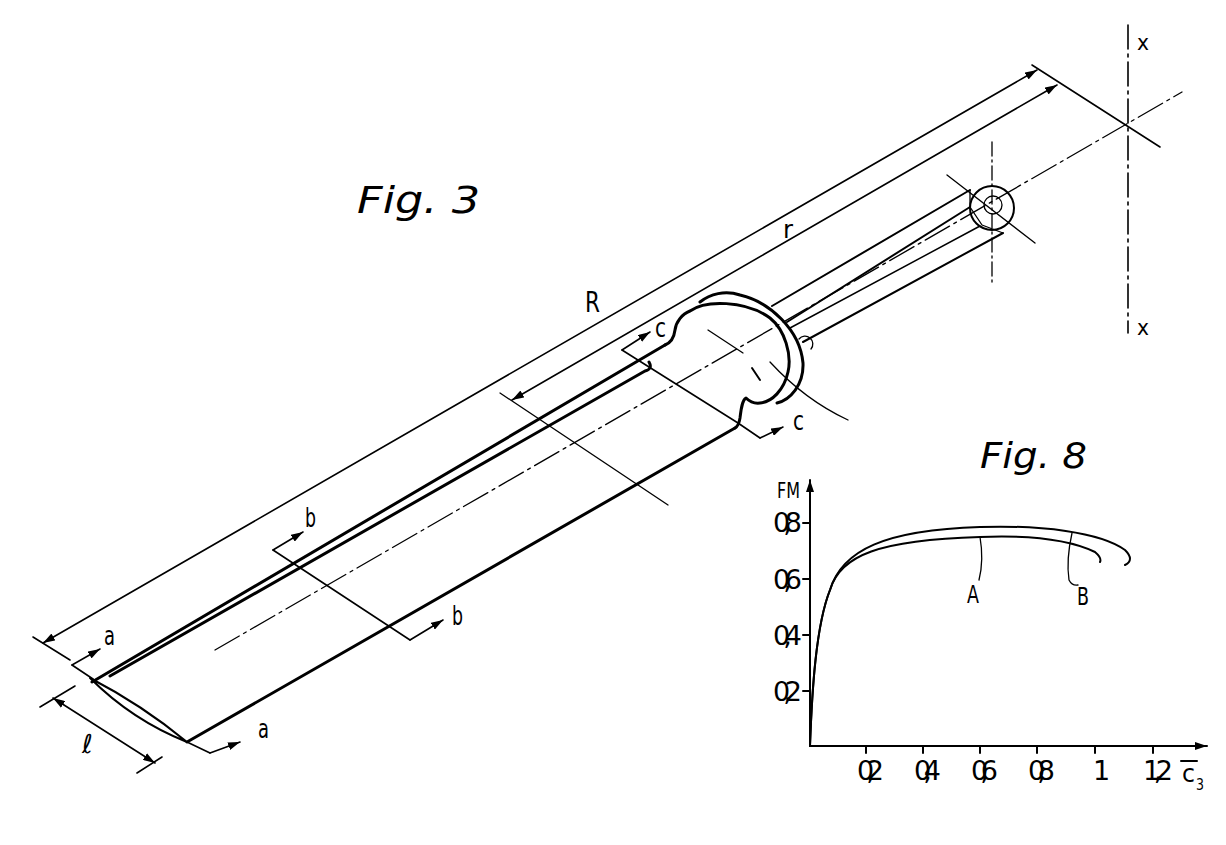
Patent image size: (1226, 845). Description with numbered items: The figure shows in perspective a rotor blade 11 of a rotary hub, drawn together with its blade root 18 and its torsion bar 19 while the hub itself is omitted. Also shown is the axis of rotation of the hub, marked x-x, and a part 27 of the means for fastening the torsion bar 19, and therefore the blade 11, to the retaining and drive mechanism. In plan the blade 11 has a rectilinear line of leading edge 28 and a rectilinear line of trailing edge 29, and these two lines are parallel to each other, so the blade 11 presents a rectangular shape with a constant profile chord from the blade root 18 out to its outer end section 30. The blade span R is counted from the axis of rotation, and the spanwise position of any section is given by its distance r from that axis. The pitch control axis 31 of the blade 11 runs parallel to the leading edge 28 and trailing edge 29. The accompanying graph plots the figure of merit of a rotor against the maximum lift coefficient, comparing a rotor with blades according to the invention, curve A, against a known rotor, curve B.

The blade 11 is at (552, 508).
The blade root 18 is at (805, 375).
The torsion bar 19 is at (865, 293).
The part of the fastening means 27 is at (999, 218).
The line of leading edge 28 is at (437, 478).
The line of trailing edge 29 is at (623, 495).
The outer end section 30 is at (158, 713).
The pitch control axis 31 is at (497, 490).